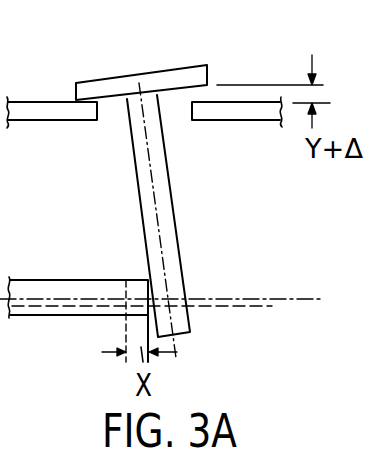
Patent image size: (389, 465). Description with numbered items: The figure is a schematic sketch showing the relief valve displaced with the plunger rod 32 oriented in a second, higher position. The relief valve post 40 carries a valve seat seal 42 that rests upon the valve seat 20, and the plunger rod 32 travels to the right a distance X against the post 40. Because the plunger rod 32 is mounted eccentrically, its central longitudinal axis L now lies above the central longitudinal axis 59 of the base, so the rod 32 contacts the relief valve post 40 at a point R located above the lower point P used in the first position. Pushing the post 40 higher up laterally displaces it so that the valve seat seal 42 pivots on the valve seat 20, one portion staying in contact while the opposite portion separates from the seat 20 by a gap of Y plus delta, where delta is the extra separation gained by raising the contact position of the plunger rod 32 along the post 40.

The valve seat 20 is at (32, 101).
The plunger rod 32 is at (43, 279).
The relief valve post 40 is at (179, 249).
The valve seat seal 42 is at (113, 79).
The central longitudinal axis 59 is at (230, 307).
The central longitudinal axis L is at (243, 299).
The point R is at (147, 280).
The point P is at (147, 300).